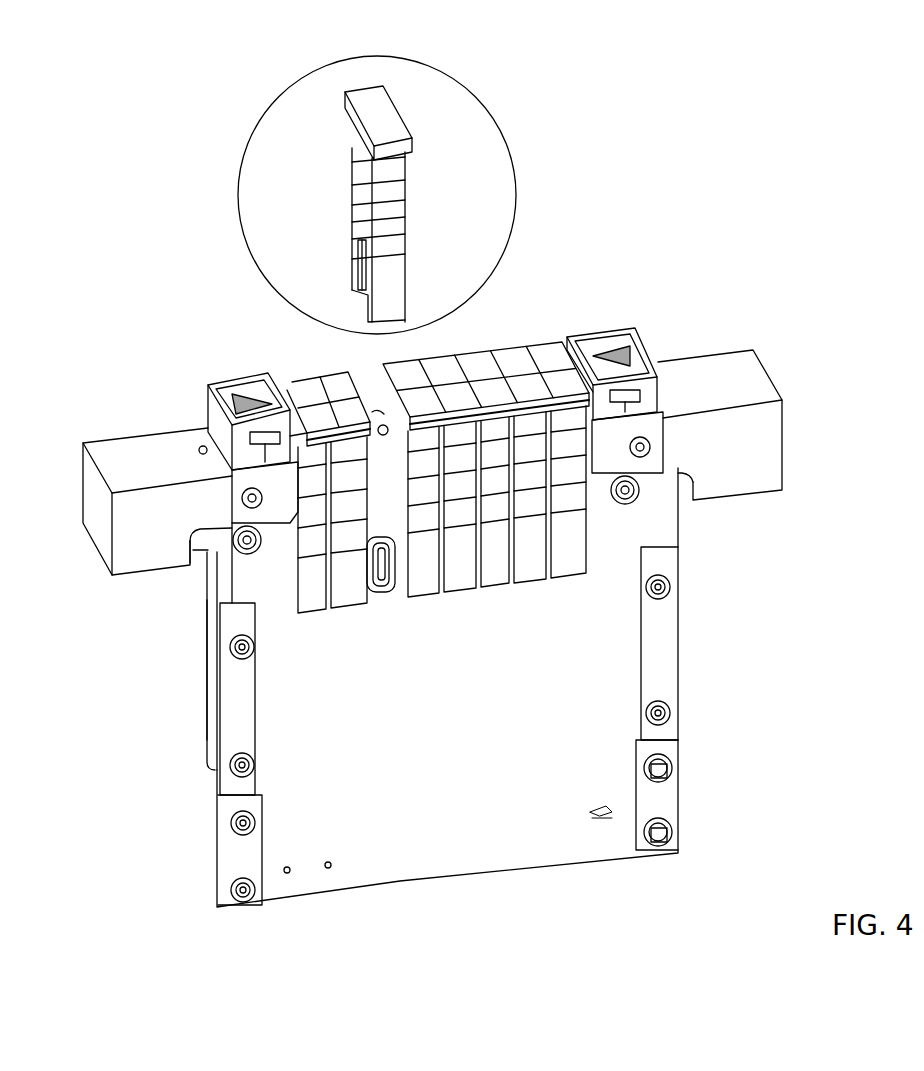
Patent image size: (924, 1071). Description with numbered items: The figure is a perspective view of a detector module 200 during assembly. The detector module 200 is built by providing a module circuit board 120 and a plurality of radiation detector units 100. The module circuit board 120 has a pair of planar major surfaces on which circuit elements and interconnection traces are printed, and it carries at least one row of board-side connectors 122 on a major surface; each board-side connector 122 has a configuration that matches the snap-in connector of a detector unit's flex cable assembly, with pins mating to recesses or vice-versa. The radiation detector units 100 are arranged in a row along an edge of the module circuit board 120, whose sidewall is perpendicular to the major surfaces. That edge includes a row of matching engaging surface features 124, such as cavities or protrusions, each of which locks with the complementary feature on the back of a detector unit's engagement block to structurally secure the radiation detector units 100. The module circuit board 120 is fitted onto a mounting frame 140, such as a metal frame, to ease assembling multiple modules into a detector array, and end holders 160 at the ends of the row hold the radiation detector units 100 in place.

The radiation detector unit 100 is at (411, 305).
The module circuit board 120 is at (380, 669).
The board-side connector 122 is at (484, 732).
The matching engaging surface feature 124 is at (398, 467).
The mounting frame 140 is at (746, 381).
The end holder 160 is at (225, 395).
The detector module 200 is at (147, 716).